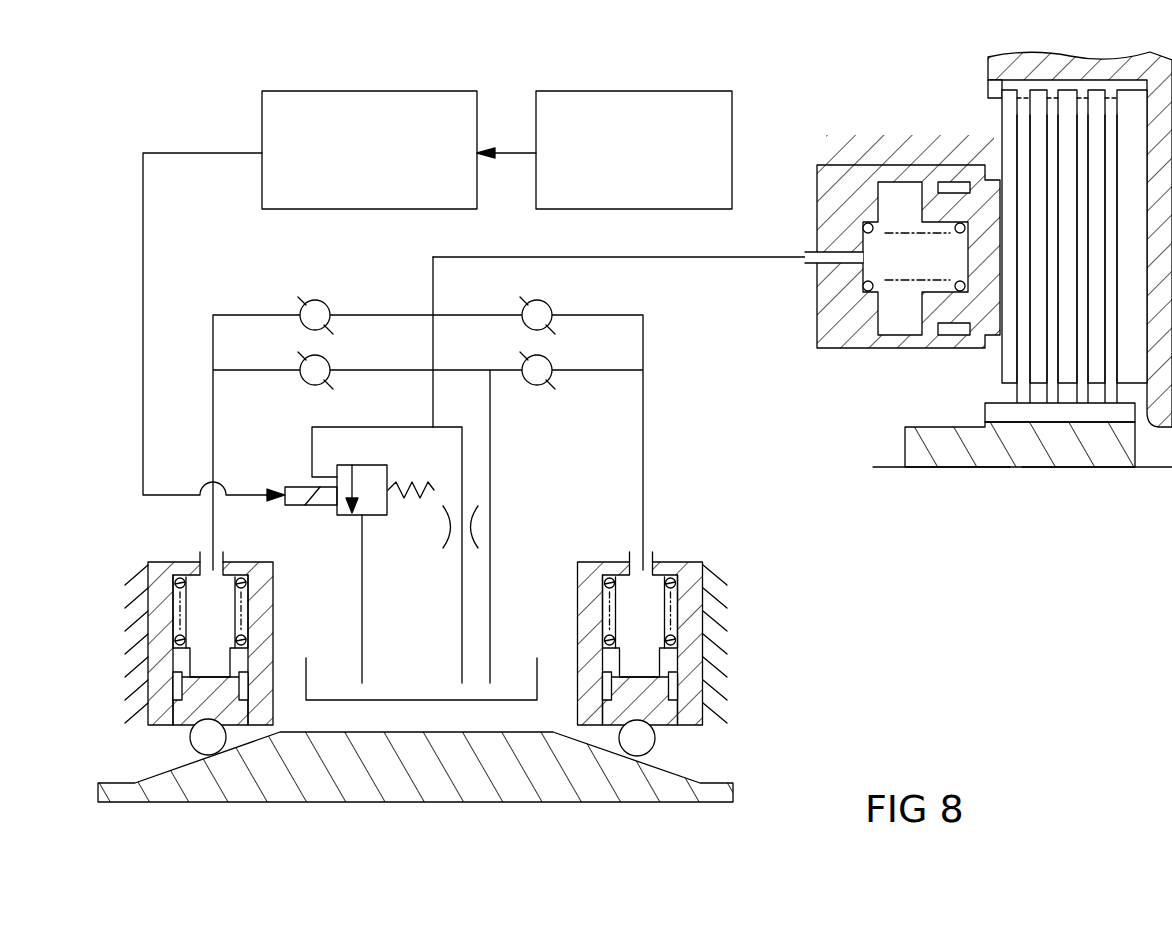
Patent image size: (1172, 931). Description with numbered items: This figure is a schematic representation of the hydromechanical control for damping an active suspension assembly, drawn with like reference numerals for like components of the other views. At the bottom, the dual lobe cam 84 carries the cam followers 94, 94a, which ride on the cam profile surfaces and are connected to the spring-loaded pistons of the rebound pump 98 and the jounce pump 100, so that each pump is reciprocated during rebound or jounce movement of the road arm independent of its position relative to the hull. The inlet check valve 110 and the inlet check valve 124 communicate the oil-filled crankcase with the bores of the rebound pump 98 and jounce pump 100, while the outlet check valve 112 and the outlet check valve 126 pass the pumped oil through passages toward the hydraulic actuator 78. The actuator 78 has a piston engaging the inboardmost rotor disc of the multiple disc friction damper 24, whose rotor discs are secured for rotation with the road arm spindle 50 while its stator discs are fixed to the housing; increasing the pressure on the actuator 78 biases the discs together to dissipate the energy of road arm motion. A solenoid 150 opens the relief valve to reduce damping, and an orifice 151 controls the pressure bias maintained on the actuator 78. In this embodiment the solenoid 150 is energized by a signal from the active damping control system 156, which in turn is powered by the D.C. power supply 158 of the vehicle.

The active damping control system 156 is at (300, 91).
The D.C. power supply 158 is at (697, 91).
The outlet check valve 112 is at (322, 302).
The inlet check valve 110 is at (326, 357).
The outlet check valve 126 is at (548, 302).
The inlet check valve 124 is at (548, 360).
The solenoid 150 is at (292, 487).
The orifice 151 is at (472, 520).
The rebound pump 98 is at (156, 645).
The jounce pump 100 is at (697, 648).
The cam follower 94 is at (200, 737).
The cam follower 94a is at (648, 740).
The dual lobe cam 84 is at (520, 800).
The multiple disc friction damper 24 is at (985, 125).
The hydraulic actuator 78 is at (880, 356).
The road arm spindle 50 is at (1030, 455).